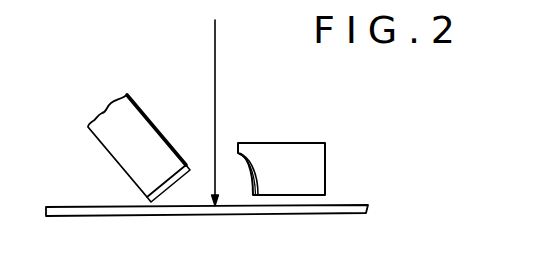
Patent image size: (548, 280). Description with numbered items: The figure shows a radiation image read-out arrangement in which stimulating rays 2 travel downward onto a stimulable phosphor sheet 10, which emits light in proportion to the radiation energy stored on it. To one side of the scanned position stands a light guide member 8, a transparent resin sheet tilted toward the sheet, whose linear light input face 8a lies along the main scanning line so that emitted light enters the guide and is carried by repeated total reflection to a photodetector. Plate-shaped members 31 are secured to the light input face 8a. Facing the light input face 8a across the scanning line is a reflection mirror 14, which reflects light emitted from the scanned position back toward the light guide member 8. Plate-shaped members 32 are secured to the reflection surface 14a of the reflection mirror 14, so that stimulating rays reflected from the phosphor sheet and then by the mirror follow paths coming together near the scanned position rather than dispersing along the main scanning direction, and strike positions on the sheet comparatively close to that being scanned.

The stimulating rays 2 is at (215, 78).
The light guide member 8 is at (132, 129).
The light input face 8a is at (163, 178).
The plate-shaped members 31 is at (188, 168).
The stimulable phosphor sheet 10 is at (343, 216).
The reflection mirror 14 is at (327, 166).
The reflection surface 14a is at (265, 176).
The plate-shaped members 32 is at (236, 157).